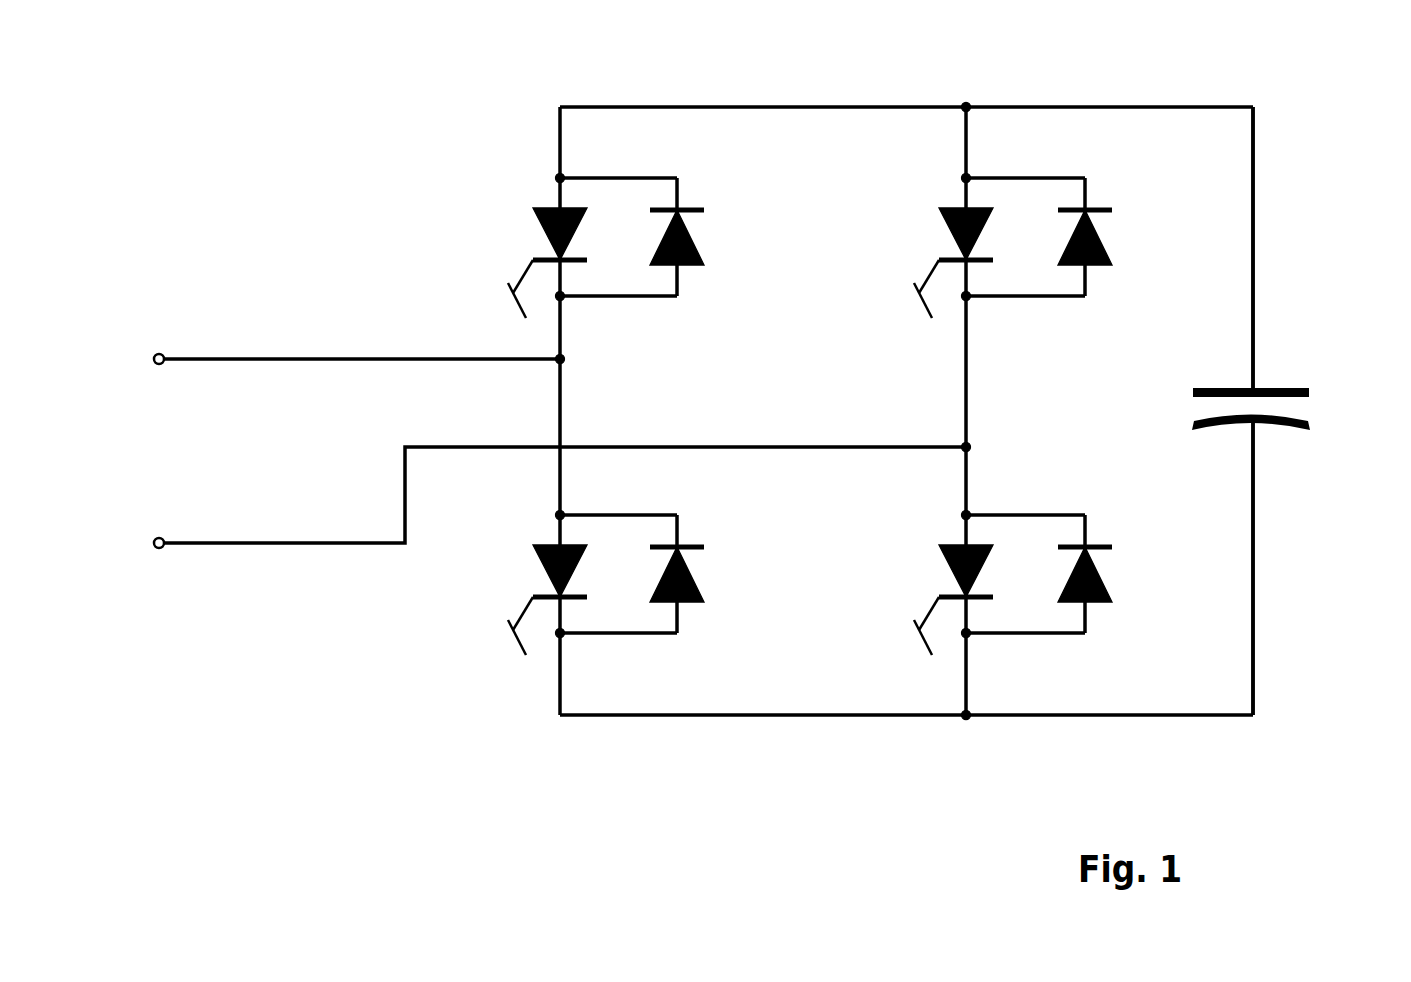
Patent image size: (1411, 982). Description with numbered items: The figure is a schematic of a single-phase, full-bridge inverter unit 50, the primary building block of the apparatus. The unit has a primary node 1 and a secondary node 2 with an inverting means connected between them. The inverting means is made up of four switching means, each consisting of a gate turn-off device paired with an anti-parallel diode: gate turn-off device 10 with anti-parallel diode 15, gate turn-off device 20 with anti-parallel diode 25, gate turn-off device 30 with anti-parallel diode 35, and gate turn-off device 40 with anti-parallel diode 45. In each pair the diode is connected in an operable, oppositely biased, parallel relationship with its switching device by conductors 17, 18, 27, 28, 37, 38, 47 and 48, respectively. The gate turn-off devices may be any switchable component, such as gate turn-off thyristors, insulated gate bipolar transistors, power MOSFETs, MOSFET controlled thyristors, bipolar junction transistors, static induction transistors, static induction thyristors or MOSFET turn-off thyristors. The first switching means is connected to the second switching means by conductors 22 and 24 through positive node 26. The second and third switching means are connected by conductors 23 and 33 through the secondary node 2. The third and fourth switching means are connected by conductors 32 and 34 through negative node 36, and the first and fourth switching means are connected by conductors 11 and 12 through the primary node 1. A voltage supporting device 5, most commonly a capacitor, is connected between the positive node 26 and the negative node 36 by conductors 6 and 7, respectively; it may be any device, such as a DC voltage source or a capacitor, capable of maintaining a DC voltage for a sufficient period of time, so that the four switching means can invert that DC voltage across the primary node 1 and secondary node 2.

The primary node 1 is at (560, 362).
The secondary node 2 is at (975, 447).
The voltage supporting device 5 is at (1285, 388).
The conductor 6 is at (1253, 200).
The conductor 7 is at (1253, 563).
The gate turn-off device 10 is at (548, 233).
The conductor 11 is at (560, 340).
The conductor 12 is at (560, 467).
The anti-parallel diode 15 is at (703, 243).
The conductor 17 is at (597, 178).
The conductor 18 is at (617, 296).
The gate turn-off device 20 is at (548, 574).
The conductor 22 is at (777, 106).
The conductor 23 is at (966, 412).
The conductor 24 is at (966, 133).
The anti-parallel diode 25 is at (695, 578).
The positive node 26 is at (967, 107).
The conductor 27 is at (615, 515).
The conductor 28 is at (610, 633).
The gate turn-off device 30 is at (950, 576).
The conductor 32 is at (833, 715).
The conductor 33 is at (966, 482).
The conductor 34 is at (966, 678).
The anti-parallel diode 35 is at (1106, 573).
The negative node 36 is at (967, 715).
The conductor 37 is at (1013, 514).
The conductor 38 is at (1030, 633).
The gate turn-off device 40 is at (947, 228).
The anti-parallel diode 45 is at (1103, 239).
The conductor 47 is at (1018, 178).
The conductor 48 is at (1020, 297).
The full-bridge inverter unit 50 is at (505, 752).